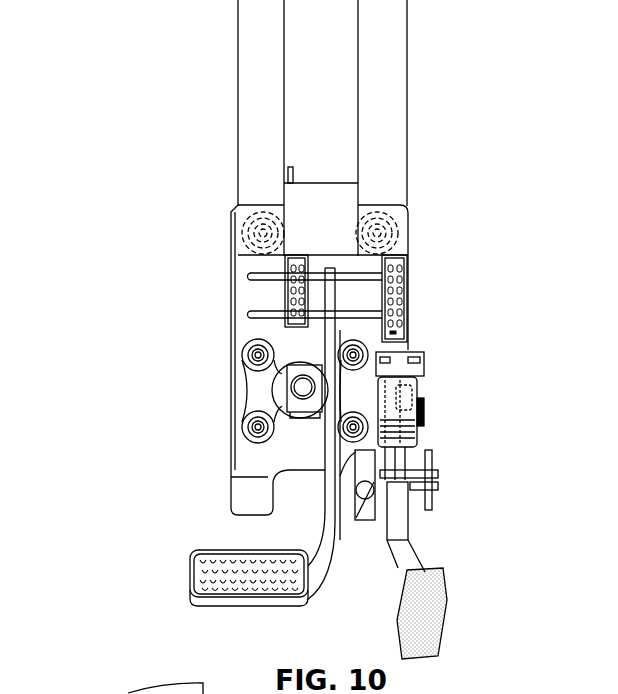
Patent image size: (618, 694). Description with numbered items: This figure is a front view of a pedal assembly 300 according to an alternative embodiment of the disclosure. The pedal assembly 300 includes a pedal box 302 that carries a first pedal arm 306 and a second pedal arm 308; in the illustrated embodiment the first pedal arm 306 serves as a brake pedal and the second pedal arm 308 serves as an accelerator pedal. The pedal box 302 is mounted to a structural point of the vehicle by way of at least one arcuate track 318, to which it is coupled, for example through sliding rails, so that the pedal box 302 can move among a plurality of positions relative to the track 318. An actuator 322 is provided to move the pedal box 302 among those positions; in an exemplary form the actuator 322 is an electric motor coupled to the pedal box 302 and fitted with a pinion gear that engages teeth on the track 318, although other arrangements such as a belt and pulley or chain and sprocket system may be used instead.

The pedal assembly 300 is at (126, 208).
The pedal box 302 is at (409, 280).
The first pedal arm 306 is at (190, 567).
The second pedal arm 308 is at (448, 597).
The arcuate track 318 is at (400, 2).
The actuator 322 is at (343, 193).